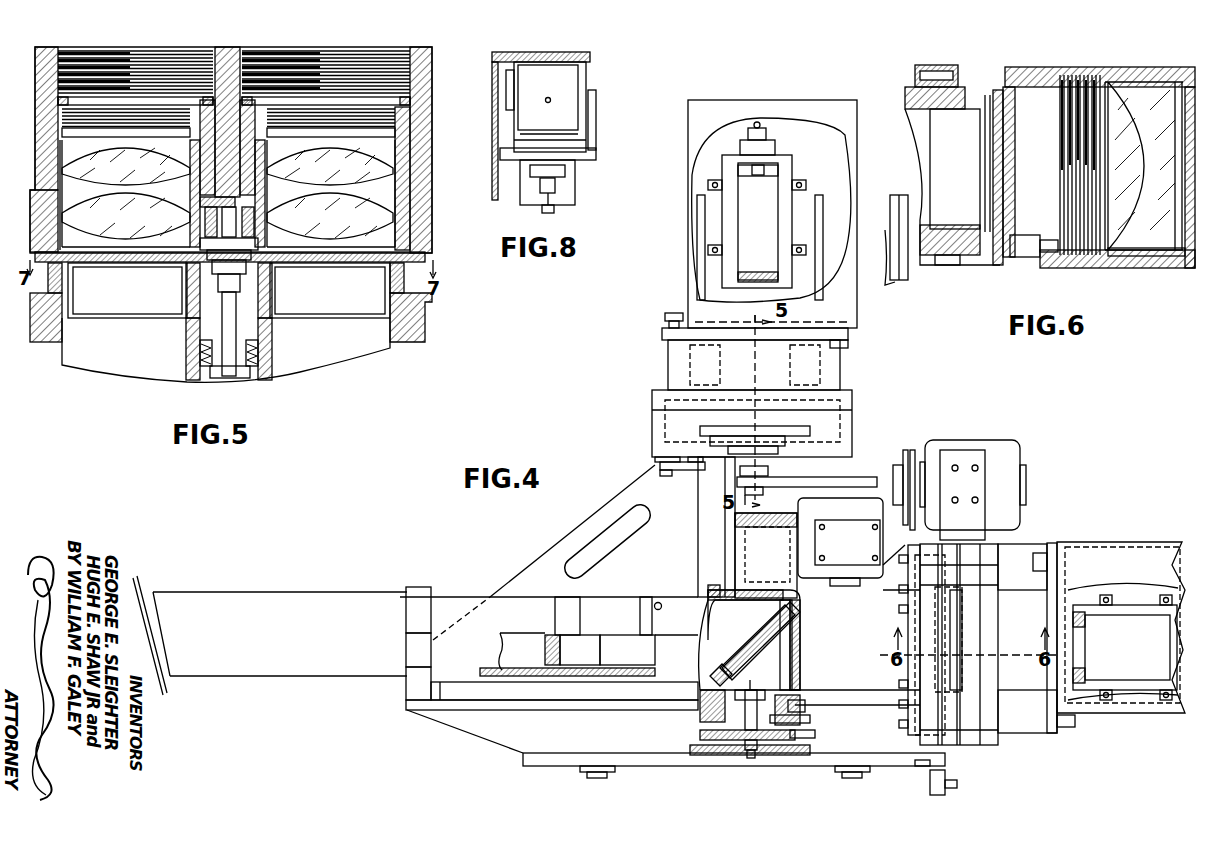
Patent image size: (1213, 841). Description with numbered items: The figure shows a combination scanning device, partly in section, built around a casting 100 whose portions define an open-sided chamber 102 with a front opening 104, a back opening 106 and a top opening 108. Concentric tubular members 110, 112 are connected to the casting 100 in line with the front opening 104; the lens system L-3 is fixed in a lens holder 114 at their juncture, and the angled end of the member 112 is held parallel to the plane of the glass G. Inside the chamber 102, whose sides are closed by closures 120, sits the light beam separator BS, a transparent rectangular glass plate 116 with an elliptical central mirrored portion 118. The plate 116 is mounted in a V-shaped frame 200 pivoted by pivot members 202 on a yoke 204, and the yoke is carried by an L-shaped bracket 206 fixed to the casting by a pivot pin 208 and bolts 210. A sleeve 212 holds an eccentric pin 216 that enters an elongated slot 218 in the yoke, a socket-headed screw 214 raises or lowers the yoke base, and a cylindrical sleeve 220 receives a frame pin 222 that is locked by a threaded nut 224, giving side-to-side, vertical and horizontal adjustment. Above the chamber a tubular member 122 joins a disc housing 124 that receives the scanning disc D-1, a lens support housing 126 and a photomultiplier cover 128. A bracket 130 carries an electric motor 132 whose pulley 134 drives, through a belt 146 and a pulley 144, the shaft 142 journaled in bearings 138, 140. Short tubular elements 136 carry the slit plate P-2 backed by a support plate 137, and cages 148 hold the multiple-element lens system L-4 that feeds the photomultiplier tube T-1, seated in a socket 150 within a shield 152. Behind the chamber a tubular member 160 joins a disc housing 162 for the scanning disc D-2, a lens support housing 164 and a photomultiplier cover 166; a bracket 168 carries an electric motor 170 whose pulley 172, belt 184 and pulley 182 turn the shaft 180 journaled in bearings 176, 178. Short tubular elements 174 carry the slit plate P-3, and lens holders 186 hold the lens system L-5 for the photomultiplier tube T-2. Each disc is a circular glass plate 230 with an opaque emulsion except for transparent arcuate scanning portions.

In FIG. 4, the casting 100 is at (482, 742).
In FIG. 4, the open-sided chamber 102 is at (675, 753).
In FIG. 4, the front opening 104 is at (652, 654).
In FIG. 4, the back opening 106 is at (800, 668).
In FIG. 4, the top opening 108 is at (715, 600).
In FIG. 4, the tubular member 110 is at (613, 600).
In FIG. 4, the tubular member 112 is at (305, 592).
In FIG. 4, the lens holder 114 is at (563, 684).
In FIG. 8, the transparent rectangular glass plate 116 is at (580, 126).
In FIG. 4, the transparent rectangular glass plate 116 is at (770, 620).
In FIG. 8, the central mirrored portion 118 is at (548, 97).
In FIG. 4, the closures 120 is at (665, 766).
In FIG. 5, the tubular member 122 is at (425, 334).
In FIG. 4, the tubular member 122 is at (722, 556).
In FIG. 5, the disc housing 124 is at (432, 315).
In FIG. 4, the disc housing 124 is at (645, 435).
In FIG. 5, the lens support housing 126 is at (432, 160).
In FIG. 4, the lens support housing 126 is at (661, 368).
In FIG. 4, the photomultiplier cover 128 is at (690, 291).
In FIG. 4, the bracket 130 is at (840, 538).
In FIG. 4, the electric motor 132 is at (846, 590).
In FIG. 4, the pulley 134 is at (870, 476).
In FIG. 5, the short tubular elements 136 is at (190, 298).
In FIG. 5, the support plate 137 is at (107, 269).
In FIG. 5, the bearing 138 is at (195, 242).
In FIG. 5, the bearing 140 is at (258, 300).
In FIG. 5, the shaft 142 is at (230, 378).
In FIG. 5, the pulley 144 is at (258, 352).
In FIG. 4, the pulley 144 is at (742, 492).
In FIG. 5, the belt 146 is at (200, 351).
In FIG. 4, the belt 146 is at (738, 476).
In FIG. 5, the cages 148 is at (206, 100).
In FIG. 4, the socket 150 is at (780, 168).
In FIG. 4, the shield 152 is at (795, 180).
In FIG. 6, the tubular member 160 is at (920, 65).
In FIG. 4, the tubular member 160 is at (872, 668).
In FIG. 6, the disc housing 162 is at (948, 65).
In FIG. 4, the disc housing 162 is at (962, 740).
In FIG. 6, the lens support housing 164 is at (1062, 67).
In FIG. 4, the lens support housing 164 is at (1020, 725).
In FIG. 4, the photomultiplier cover 166 is at (1128, 712).
In FIG. 4, the bracket 168 is at (965, 450).
In FIG. 4, the electric motor 170 is at (1020, 455).
In FIG. 4, the pulley 172 is at (905, 450).
In FIG. 6, the short tubular elements 174 is at (972, 111).
In FIG. 6, the bearing 176 is at (1040, 258).
In FIG. 6, the bearing 178 is at (947, 266).
In FIG. 6, the shaft 180 is at (1022, 262).
In FIG. 6, the pulley 182 is at (896, 280).
In FIG. 6, the belt 184 is at (910, 195).
In FIG. 4, the belt 184 is at (910, 462).
In FIG. 6, the lens holders 186 is at (1150, 256).
In FIG. 8, the V-shaped frame 200 is at (586, 118).
In FIG. 4, the V-shaped frame 200 is at (712, 612).
In FIG. 8, the pivot members 202 is at (510, 88).
In FIG. 8, the yoke 204 is at (597, 112).
In FIG. 4, the L-shaped bracket 206 is at (782, 755).
In FIG. 4, the pivot pin 208 is at (805, 712).
In FIG. 4, the bolts 210 is at (810, 736).
In FIG. 4, the sleeve 212 is at (700, 725).
In FIG. 4, the socket-headed screw 214 is at (755, 758).
In FIG. 4, the eccentric pin 216 is at (735, 703).
In FIG. 4, the elongated slot 218 is at (752, 684).
In FIG. 4, the cylindrical sleeve 220 is at (810, 720).
In FIG. 4, the frame pin 222 is at (798, 690).
In FIG. 4, the threaded nut 224 is at (738, 740).
In FIG. 5, the circular glass plate 230 is at (249, 249).
In FIG. 8, the light beam separator BS is at (606, 84).
In FIG. 4, the light beam separator BS is at (798, 657).
In FIG. 4, the glass G is at (138, 580).
In FIG. 4, the lens system L-3 is at (545, 633).
In FIG. 5, the multiple-element lens system L-4 is at (426, 134).
In FIG. 6, the multiple-element lens system L-5 is at (1146, 58).
In FIG. 5, the plate P-2 is at (229, 290).
In FIG. 6, the plate P-3 is at (978, 145).
In FIG. 4, the scanning disc D-1 is at (830, 422).
In FIG. 4, the scanning disc D-2 is at (960, 688).
In FIG. 4, the photomultiplier tube T-1 is at (760, 211).
In FIG. 4, the photomultiplier tube T-2 is at (1125, 647).